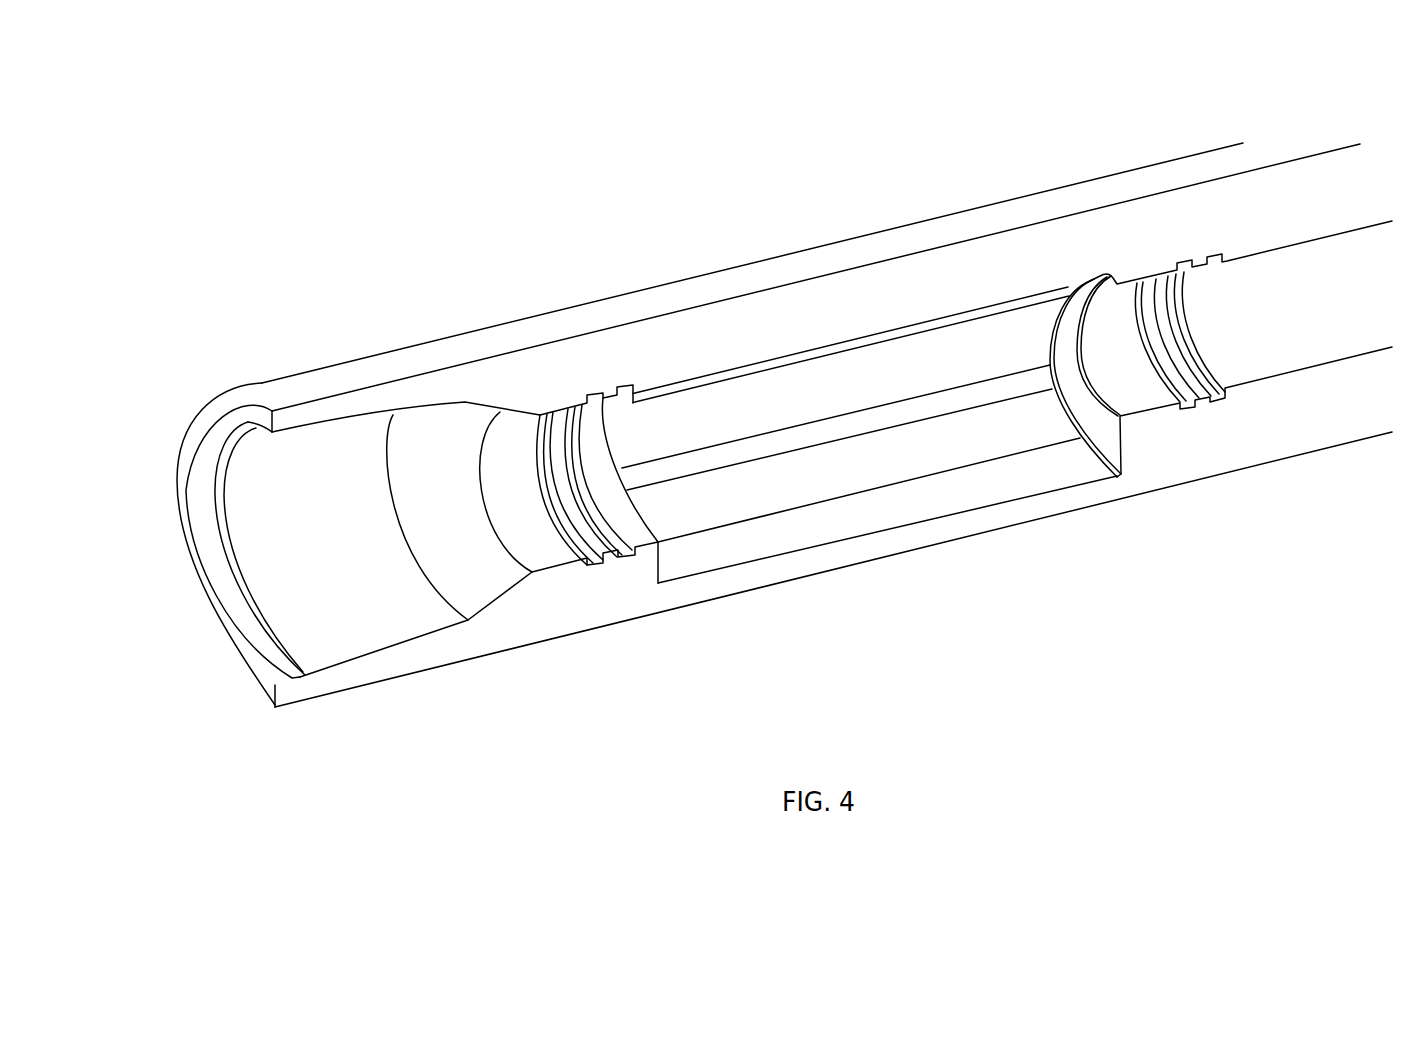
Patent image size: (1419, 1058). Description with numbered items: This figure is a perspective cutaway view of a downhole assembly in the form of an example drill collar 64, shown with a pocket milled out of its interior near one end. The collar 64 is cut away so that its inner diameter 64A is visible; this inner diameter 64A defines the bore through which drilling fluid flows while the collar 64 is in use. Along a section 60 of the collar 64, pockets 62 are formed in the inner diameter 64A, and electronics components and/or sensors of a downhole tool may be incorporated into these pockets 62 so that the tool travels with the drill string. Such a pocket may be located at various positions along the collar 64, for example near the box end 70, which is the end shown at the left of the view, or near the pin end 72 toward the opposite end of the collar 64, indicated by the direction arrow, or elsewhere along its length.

The section 60 is at (950, 350).
The pockets 62 is at (813, 507).
The drill collar 64 is at (292, 170).
The inner diameter 64A is at (1098, 398).
The box end 70 is at (318, 497).
The pin end 72 is at (1314, 290).